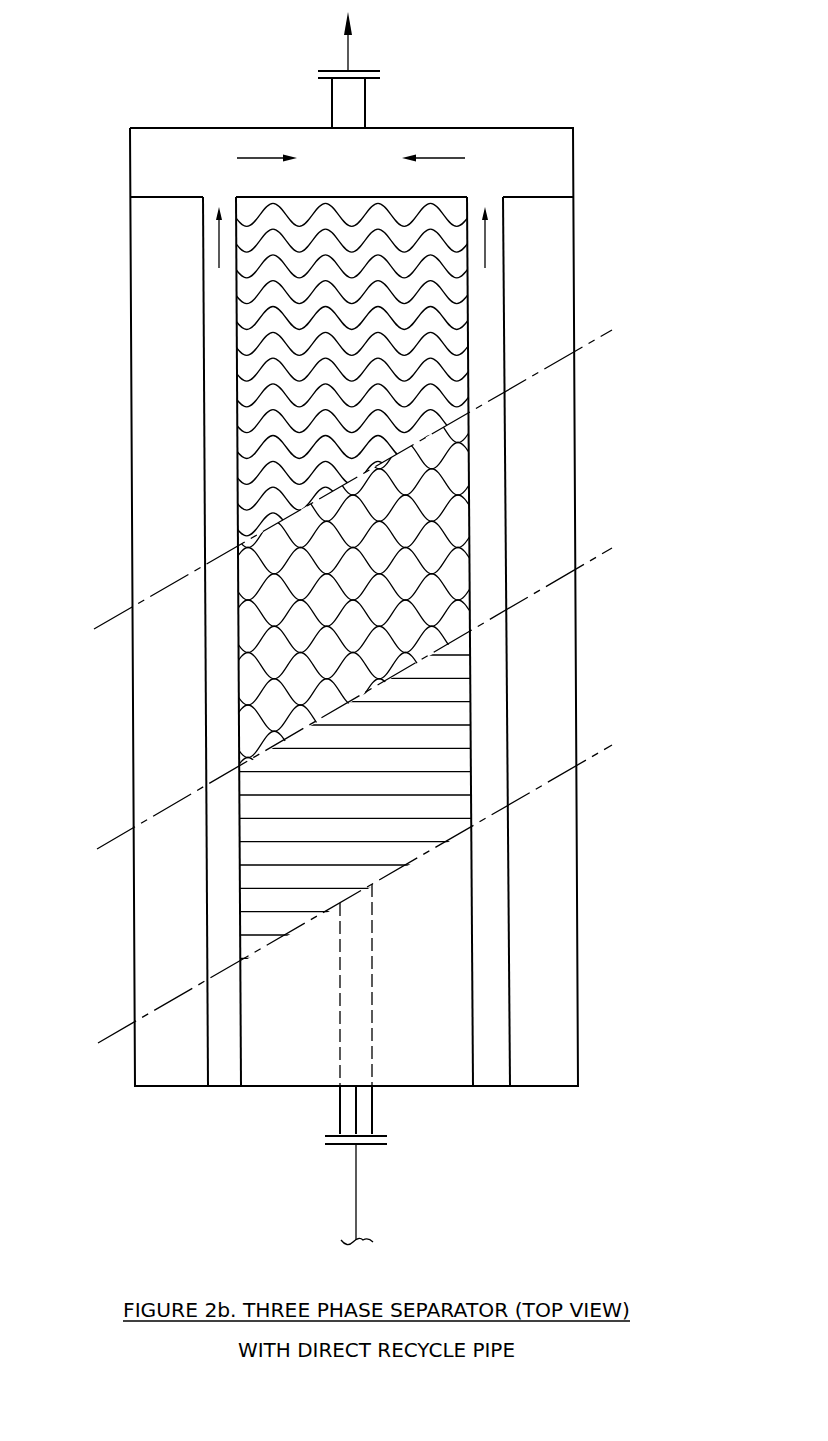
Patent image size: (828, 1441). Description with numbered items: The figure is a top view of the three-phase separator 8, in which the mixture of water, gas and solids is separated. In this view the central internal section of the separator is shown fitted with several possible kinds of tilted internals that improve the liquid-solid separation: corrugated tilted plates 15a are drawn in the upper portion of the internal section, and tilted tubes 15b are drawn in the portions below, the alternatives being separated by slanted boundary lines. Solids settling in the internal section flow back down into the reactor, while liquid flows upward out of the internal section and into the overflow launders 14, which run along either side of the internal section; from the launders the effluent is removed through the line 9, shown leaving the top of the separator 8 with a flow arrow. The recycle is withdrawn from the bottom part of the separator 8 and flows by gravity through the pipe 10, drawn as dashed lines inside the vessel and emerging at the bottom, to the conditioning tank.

The three-phase separator 8 is at (326, 607).
The effluent line 9 is at (365, 65).
The recycle pipe 10 is at (376, 1064).
The overflow launders 14 is at (356, 641).
The corrugated tilted plates 15a is at (450, 382).
The tilted tubes 15b is at (438, 674).